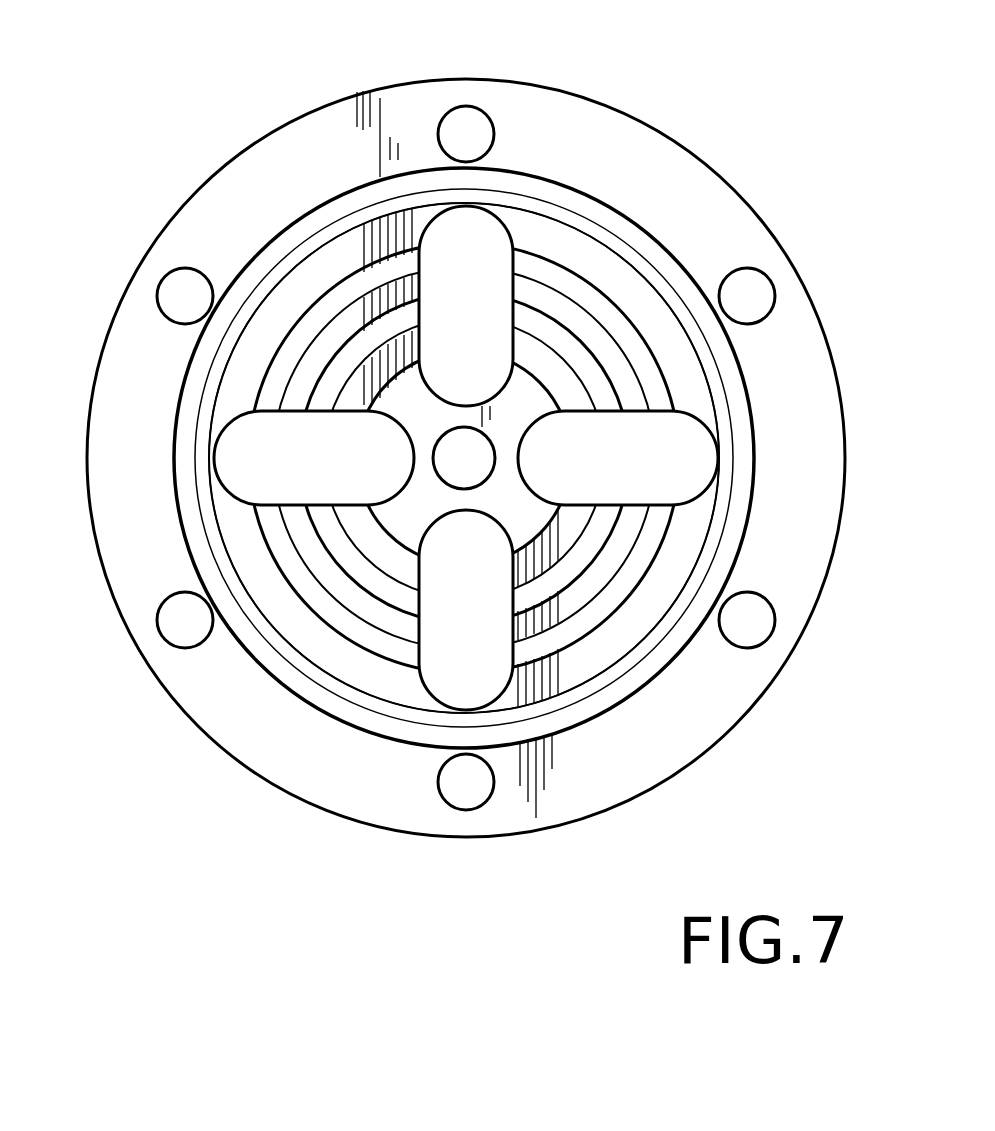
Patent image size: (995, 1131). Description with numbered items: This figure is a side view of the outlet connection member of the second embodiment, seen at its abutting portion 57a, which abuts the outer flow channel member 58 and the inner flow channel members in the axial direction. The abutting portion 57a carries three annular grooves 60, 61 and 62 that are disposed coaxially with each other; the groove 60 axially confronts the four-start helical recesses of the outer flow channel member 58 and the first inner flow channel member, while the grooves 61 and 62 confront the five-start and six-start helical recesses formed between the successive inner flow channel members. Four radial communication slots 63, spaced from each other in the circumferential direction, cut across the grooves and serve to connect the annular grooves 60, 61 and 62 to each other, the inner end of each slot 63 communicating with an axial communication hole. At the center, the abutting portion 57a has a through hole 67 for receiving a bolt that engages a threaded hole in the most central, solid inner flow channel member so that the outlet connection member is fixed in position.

The outer flow channel member 58 is at (248, 127).
The abutting portion 57a is at (560, 273).
The annular groove 60 is at (553, 663).
The annular groove 61 is at (568, 605).
The annular groove 62 is at (563, 537).
The radial communication slot 63 is at (503, 255).
The through hole 67 is at (478, 452).